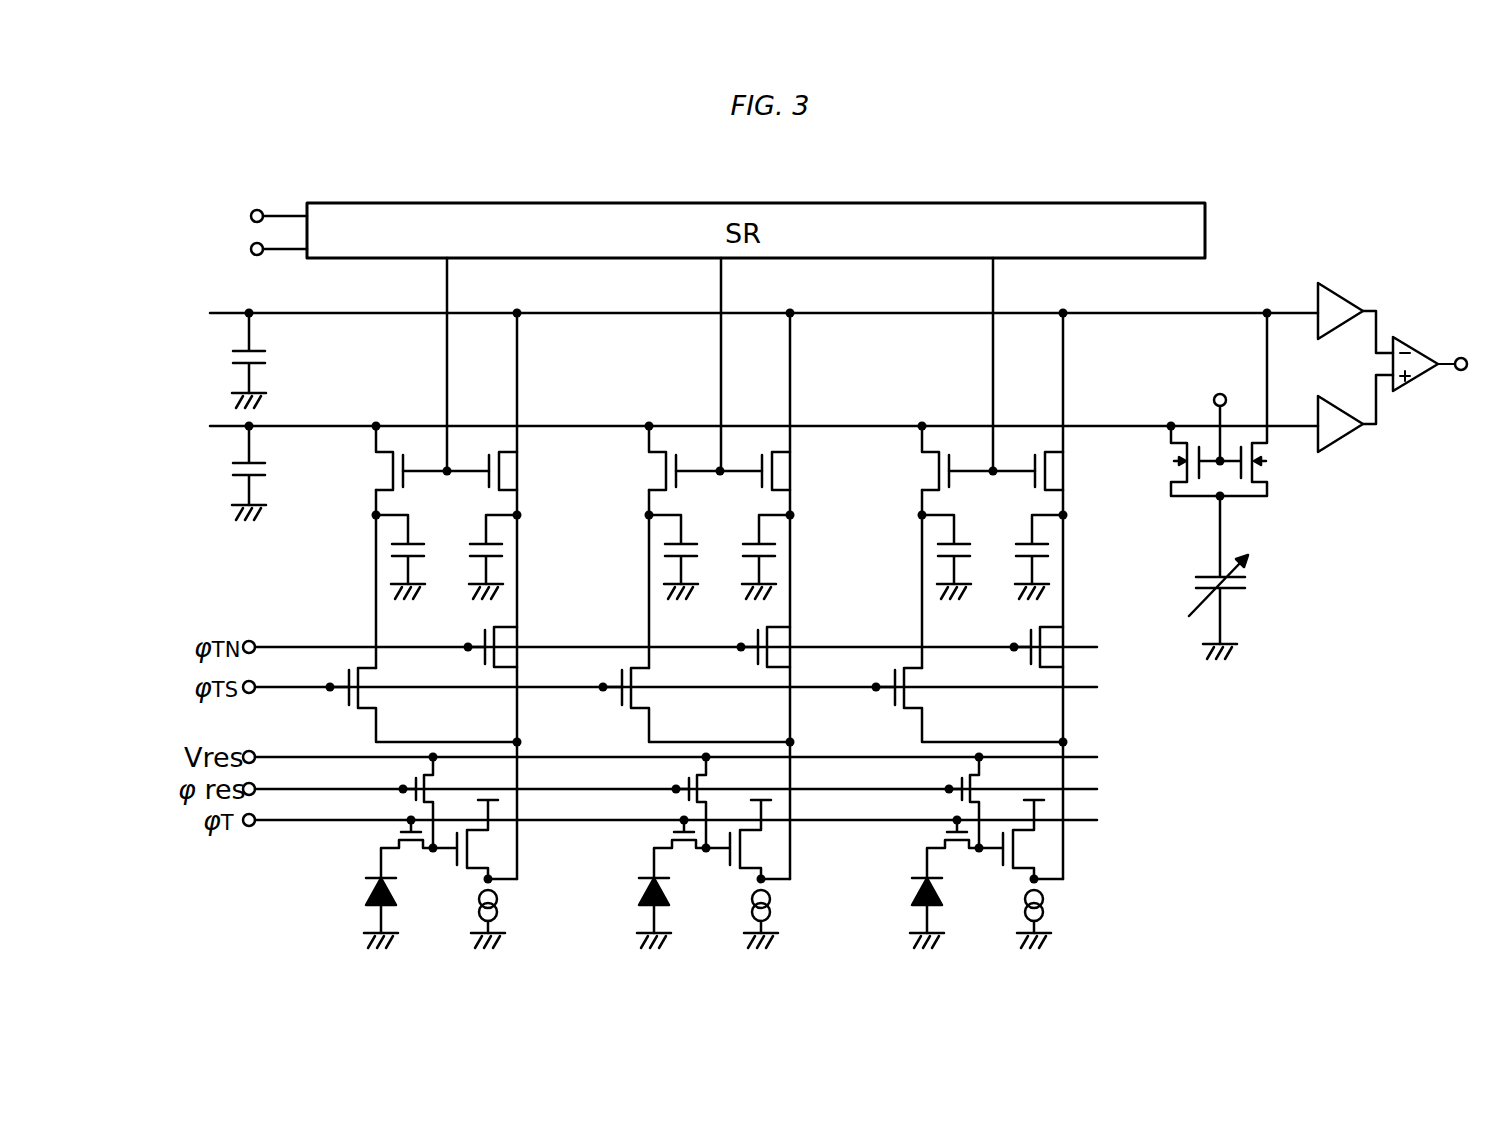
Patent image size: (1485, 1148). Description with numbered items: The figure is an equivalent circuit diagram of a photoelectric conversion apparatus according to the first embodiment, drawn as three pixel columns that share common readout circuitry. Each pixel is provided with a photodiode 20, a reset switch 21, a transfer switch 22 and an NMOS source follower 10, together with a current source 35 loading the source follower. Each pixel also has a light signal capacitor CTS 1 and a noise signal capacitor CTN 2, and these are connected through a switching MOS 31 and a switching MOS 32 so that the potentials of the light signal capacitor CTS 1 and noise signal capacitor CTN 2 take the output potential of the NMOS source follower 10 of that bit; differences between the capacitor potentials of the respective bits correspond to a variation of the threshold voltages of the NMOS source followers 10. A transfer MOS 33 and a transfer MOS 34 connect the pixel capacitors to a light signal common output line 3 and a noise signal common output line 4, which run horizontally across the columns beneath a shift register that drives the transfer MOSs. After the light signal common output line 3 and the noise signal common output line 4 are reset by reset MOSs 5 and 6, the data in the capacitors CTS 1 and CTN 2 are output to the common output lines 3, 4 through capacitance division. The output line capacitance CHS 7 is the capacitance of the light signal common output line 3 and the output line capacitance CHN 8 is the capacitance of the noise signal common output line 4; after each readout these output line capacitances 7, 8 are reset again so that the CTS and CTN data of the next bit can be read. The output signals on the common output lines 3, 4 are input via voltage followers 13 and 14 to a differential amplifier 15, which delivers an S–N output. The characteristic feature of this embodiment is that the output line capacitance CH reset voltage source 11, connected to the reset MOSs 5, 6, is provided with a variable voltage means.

The light signal capacitor CTS 1 is at (410, 552).
The noise signal capacitor CTN 2 is at (515, 557).
The light signal common output line 3 is at (875, 426).
The noise signal common output line 4 is at (893, 313).
The reset MOS 5 is at (1168, 452).
The reset MOS 6 is at (1275, 473).
The output line capacitance CHS 7 is at (270, 470).
The output line capacitance CHN 8 is at (270, 358).
The NMOS source follower 10 is at (500, 839).
The output line capacitance CH reset voltage source 11 is at (1247, 584).
The voltage follower 13 is at (1345, 283).
The voltage follower 14 is at (1350, 455).
The differential amplifier 15 is at (1420, 337).
The photodiode 20 is at (348, 913).
The reset switch 21 is at (445, 770).
The transfer switch 22 is at (412, 870).
The switching MOS 31 is at (423, 705).
The switching MOS 32 is at (527, 637).
The transfer MOS 33 is at (358, 468).
The transfer MOS 34 is at (534, 471).
The current source 35 is at (519, 919).